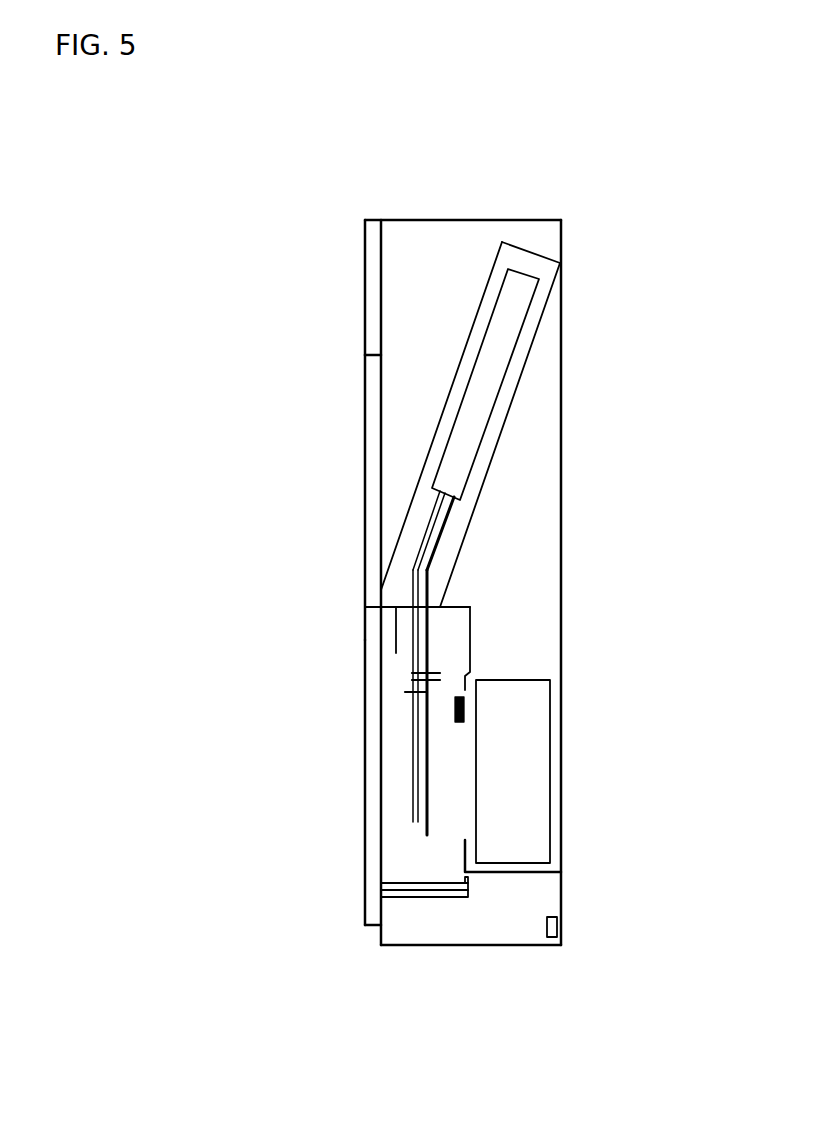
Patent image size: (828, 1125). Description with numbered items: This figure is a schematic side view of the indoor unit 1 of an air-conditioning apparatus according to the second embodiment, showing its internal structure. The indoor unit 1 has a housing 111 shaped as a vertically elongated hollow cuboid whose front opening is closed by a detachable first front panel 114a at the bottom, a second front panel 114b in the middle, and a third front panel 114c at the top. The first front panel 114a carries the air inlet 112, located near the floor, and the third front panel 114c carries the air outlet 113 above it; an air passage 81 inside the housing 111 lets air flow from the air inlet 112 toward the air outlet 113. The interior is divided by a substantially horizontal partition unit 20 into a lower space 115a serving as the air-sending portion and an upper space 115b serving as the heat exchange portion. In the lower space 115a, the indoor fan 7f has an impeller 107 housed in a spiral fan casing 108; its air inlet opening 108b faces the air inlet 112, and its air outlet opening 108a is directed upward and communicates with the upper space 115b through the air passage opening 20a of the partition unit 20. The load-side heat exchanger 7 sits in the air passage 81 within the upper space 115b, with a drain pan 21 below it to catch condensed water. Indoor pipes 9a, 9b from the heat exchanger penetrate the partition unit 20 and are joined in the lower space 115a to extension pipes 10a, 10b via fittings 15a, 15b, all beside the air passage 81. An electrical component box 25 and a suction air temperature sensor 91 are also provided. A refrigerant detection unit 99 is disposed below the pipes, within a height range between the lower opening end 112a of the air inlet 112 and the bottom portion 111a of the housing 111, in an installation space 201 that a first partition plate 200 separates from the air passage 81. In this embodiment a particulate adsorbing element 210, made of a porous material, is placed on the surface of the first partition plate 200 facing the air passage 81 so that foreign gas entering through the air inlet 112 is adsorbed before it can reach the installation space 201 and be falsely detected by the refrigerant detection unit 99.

The indoor unit 1 is at (547, 208).
The housing 111 is at (563, 258).
The third front panel 114c is at (373, 257).
The air outlet 113 is at (358, 307).
The second front panel 114b is at (372, 440).
The first front panel 114a is at (364, 897).
The air inlet 112 is at (351, 781).
The lower opening end 112a is at (372, 878).
The bottom portion 111a is at (518, 938).
The load-side heat exchanger 7 is at (440, 395).
The upper space 115b is at (540, 399).
The air passage 81 is at (533, 478).
The indoor pipe 9a is at (433, 513).
The indoor pipe 9b is at (444, 522).
The extension pipe 10a is at (417, 771).
The extension pipe 10b is at (425, 748).
The drain pan 21 is at (427, 600).
The partition unit 20 is at (390, 598).
The electrical component box 25 is at (388, 630).
The fitting 15b is at (428, 673).
The fitting 15a is at (420, 692).
The suction air temperature sensor 91 is at (465, 712).
The impeller 107 is at (552, 815).
The indoor fan 7f is at (527, 736).
The fan casing 108 is at (487, 873).
The particulate adsorbing element 210 is at (397, 880).
The refrigerant detection unit 99 is at (561, 932).
The air passage opening 20a is at (512, 607).
The air outlet opening 108a is at (528, 608).
The lower space 115a is at (402, 842).
The air inlet opening 108b is at (462, 787).
The first partition plate 200 is at (421, 898).
The installation space 201 is at (470, 922).